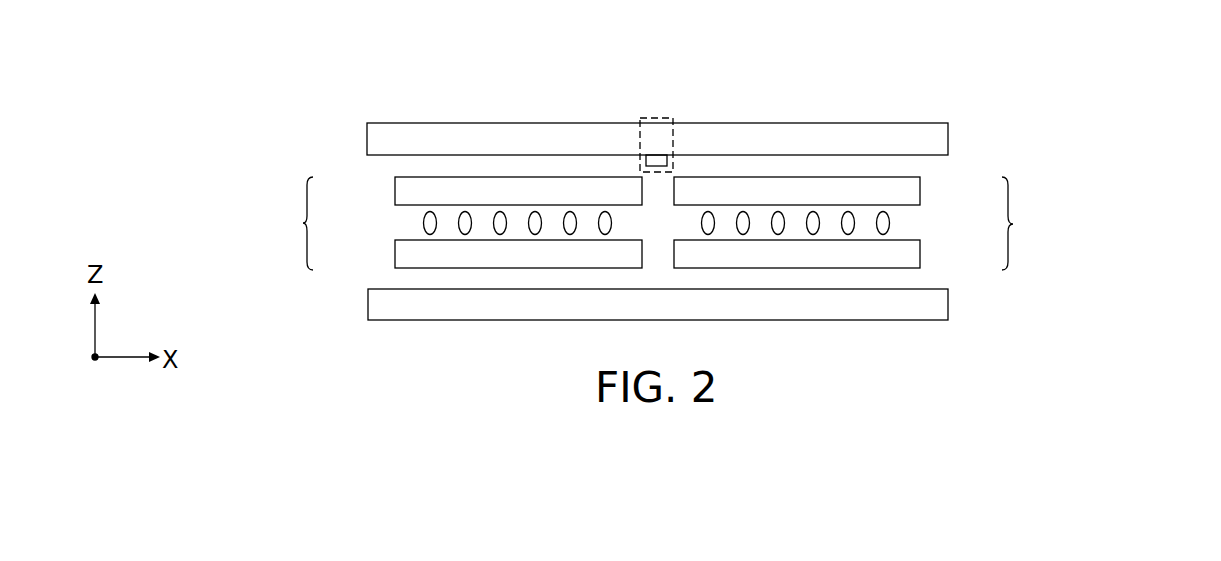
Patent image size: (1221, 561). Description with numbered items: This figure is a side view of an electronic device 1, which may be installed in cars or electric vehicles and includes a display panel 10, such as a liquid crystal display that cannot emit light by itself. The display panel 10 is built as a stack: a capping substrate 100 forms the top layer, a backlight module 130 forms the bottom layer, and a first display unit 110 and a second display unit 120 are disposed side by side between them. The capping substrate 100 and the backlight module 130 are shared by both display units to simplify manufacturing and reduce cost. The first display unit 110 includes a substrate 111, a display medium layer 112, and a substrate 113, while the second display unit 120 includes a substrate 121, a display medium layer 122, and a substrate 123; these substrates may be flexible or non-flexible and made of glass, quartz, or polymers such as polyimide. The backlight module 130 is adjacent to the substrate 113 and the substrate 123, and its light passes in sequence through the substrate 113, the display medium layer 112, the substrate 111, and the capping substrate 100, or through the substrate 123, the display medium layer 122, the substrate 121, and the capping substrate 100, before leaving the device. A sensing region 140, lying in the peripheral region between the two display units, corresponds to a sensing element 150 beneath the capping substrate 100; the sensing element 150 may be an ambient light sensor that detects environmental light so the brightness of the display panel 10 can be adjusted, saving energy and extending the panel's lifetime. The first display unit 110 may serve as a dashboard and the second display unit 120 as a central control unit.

The electronic device 1 is at (329, 88).
The display panel 10 is at (408, 99).
The capping substrate 100 is at (927, 141).
The first display unit 110 is at (284, 226).
The substrate 111 is at (417, 192).
The display medium layer 112 is at (424, 223).
The substrate 113 is at (417, 253).
The second display unit 120 is at (1036, 226).
The substrate 121 is at (898, 192).
The display medium layer 122 is at (886, 223).
The substrate 123 is at (898, 253).
The backlight module 130 is at (388, 303).
The sensing region 140 is at (667, 108).
The sensing element 150 is at (658, 160).